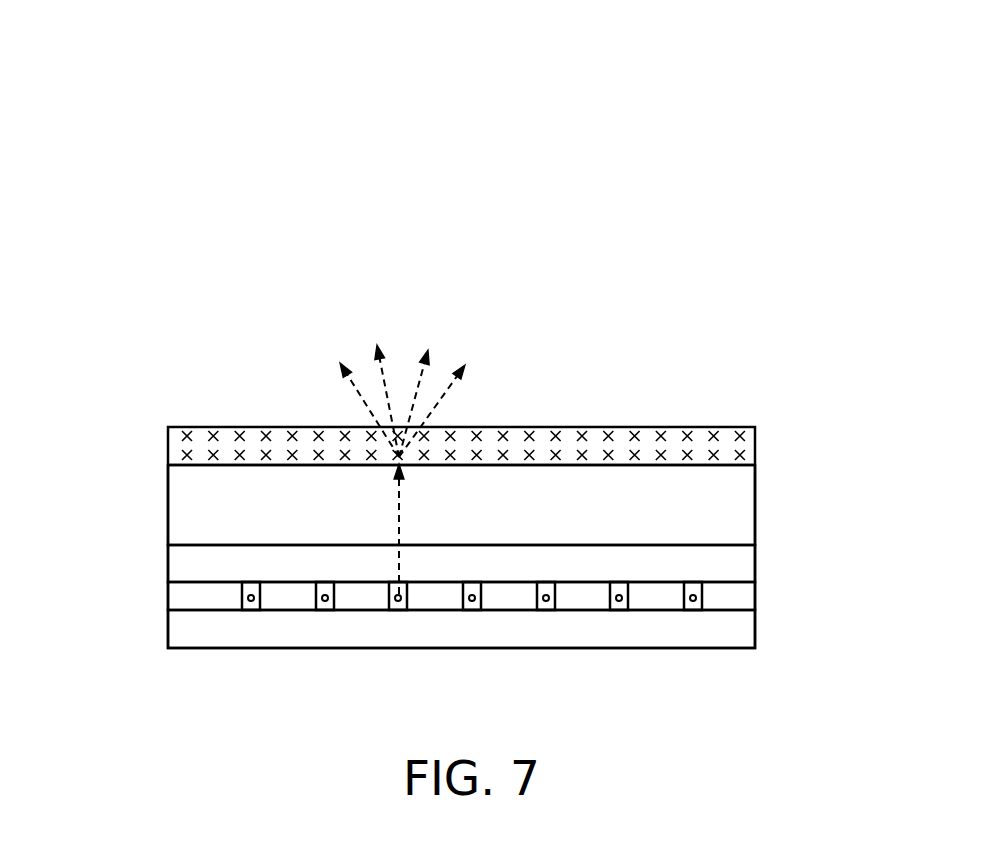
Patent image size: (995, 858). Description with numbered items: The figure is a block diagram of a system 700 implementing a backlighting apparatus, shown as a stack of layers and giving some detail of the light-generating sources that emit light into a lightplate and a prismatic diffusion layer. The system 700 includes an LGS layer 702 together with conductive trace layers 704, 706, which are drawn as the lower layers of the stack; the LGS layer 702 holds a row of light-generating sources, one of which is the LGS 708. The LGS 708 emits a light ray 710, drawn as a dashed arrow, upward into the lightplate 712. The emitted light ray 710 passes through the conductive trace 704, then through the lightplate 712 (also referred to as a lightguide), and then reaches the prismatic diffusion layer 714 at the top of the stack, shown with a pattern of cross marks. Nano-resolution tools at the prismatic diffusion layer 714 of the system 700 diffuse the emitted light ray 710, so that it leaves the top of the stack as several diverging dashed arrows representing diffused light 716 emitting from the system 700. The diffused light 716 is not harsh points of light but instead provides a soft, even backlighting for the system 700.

The system 700 is at (461, 354).
The LGS layer 702 is at (401, 560).
The conductive trace layer 704 is at (401, 520).
The conductive trace layer 706 is at (401, 601).
The LGS 708 is at (342, 634).
The light ray 710 is at (500, 476).
The lightplate 712 is at (401, 474).
The prismatic diffusion layer 714 is at (401, 405).
The diffused light 716 is at (473, 332).